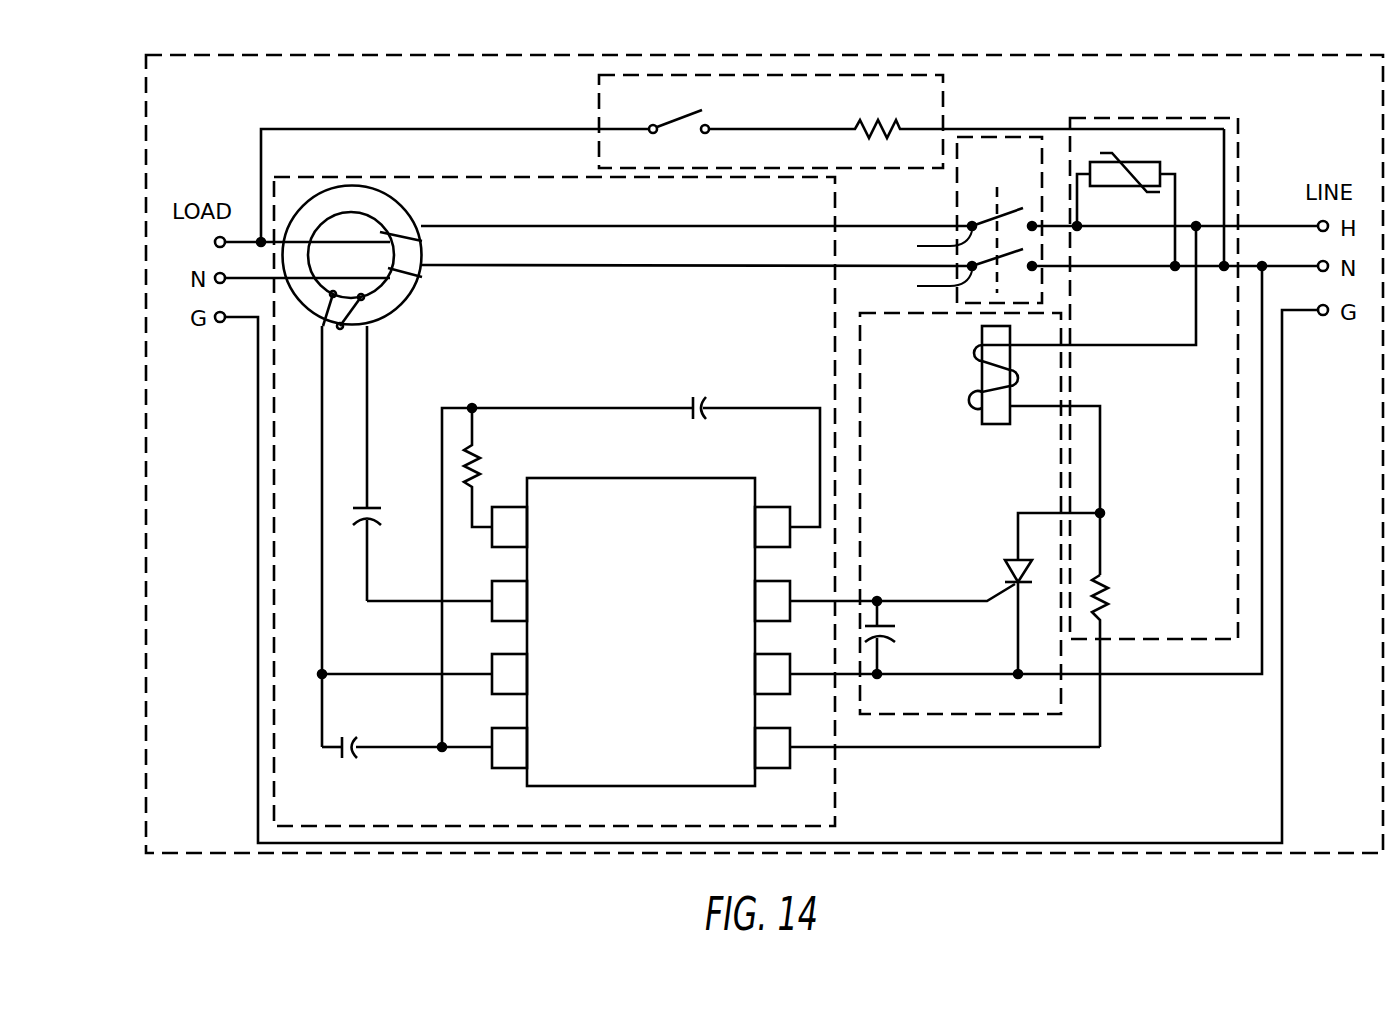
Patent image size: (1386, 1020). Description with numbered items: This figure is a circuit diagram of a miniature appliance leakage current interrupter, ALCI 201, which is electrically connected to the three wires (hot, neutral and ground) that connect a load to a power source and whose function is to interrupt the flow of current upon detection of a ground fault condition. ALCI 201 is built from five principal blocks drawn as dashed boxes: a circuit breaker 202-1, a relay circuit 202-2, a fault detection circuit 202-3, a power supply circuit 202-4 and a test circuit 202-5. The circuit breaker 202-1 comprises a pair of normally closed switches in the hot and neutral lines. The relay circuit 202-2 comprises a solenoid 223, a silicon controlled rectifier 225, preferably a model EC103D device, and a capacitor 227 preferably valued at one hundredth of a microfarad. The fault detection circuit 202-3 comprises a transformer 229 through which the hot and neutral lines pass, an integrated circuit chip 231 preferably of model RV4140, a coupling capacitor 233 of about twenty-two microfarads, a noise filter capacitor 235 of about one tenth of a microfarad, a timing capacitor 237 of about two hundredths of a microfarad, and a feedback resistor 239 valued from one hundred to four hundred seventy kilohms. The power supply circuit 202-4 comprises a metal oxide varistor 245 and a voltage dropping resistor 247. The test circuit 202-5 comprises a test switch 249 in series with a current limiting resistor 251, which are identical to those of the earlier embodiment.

The appliance leakage current interrupter 201 is at (294, 874).
The circuit breaker 202-1 is at (957, 187).
The relay circuit 202-2 is at (981, 715).
The fault detection circuit 202-3 is at (273, 623).
The power supply circuit 202-4 is at (1238, 557).
The test circuit 202-5 is at (946, 96).
The solenoid 223 is at (978, 372).
The silicon controlled rectifier 225 is at (1013, 558).
The capacitor 227 is at (892, 631).
The transformer 229 is at (398, 305).
The integrated circuit chip 231 is at (682, 773).
The coupling capacitor 233 is at (355, 511).
The noise filter capacitor 235 is at (348, 737).
The timing capacitor 237 is at (703, 403).
The feedback resistor 239 is at (480, 445).
The metal oxide varistor 245 is at (1143, 162).
The voltage dropping resistor 247 is at (1110, 585).
The test switch 249 is at (681, 134).
The current limiting resistor 251 is at (875, 137).